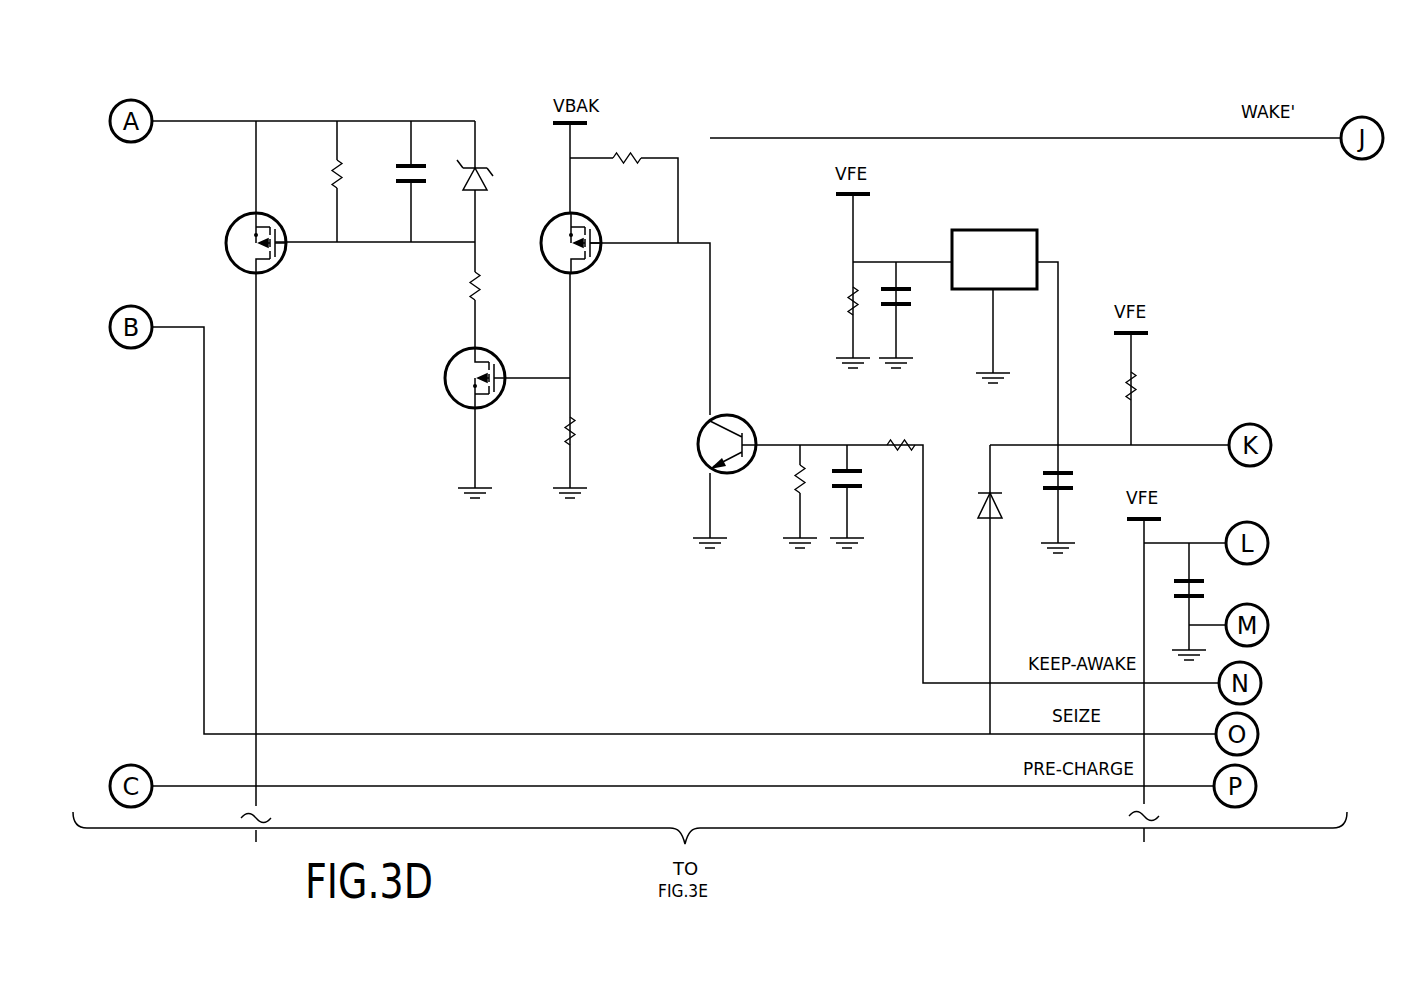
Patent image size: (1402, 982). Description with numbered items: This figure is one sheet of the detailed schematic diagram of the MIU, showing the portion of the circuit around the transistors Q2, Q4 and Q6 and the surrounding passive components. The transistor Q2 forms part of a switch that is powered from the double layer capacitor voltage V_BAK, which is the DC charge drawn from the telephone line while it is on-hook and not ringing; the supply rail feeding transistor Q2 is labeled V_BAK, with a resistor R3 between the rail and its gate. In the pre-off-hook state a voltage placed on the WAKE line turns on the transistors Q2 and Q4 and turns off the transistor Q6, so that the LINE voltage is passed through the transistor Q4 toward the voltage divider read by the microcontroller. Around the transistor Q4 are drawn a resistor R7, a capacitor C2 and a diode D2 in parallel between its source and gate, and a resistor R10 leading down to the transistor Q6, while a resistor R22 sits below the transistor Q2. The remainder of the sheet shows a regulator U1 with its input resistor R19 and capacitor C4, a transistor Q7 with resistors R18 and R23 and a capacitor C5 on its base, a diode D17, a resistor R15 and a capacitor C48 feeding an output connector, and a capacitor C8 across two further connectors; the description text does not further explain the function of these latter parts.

The transistor Q4 is at (286, 250).
The resistor 1M R7 is at (352, 181).
The capacitor .01 C2 is at (424, 181).
The zener diode MBZ5242B D2 is at (497, 167).
The resistor 1M R10 is at (458, 295).
The transistor Q6 is at (450, 409).
The transistor Q2 is at (600, 260).
The resistor 1M R3 is at (624, 185).
The resistor 1M R22 is at (596, 434).
The voltage regulator U1 is at (996, 257).
The resistor 100K R19 is at (827, 302).
The capacitor .1 C4 is at (914, 312).
The NPN transistor MBT3904 Q7 is at (754, 421).
The resistor 10K R18 is at (897, 424).
The resistor 10K R23 is at (780, 491).
The capacitor .1 C5 is at (865, 491).
The diode MBD4148 D17 is at (985, 469).
The resistor 100K R15 is at (1107, 384).
The capacitor .01 C48 is at (1081, 490).
The capacitor .1 C8 is at (1176, 578).